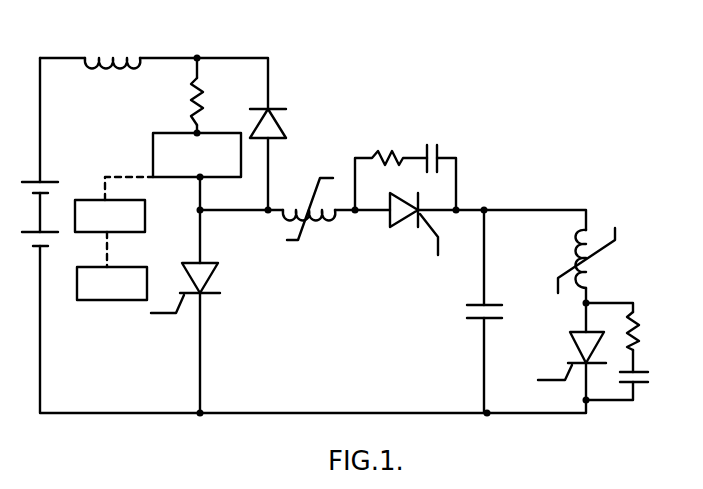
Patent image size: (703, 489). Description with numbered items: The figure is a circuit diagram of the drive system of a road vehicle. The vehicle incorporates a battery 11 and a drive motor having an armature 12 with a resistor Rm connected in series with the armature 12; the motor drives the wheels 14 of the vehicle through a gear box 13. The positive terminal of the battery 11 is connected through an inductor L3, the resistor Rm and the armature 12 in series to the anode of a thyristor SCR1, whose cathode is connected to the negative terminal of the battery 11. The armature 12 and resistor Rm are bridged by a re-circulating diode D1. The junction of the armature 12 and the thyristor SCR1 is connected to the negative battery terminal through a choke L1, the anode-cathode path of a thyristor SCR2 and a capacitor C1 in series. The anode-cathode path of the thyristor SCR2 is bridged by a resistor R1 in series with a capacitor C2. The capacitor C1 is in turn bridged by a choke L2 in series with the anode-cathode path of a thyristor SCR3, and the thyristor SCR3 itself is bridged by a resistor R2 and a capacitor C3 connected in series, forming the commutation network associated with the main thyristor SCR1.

The battery 11 is at (36, 202).
The armature 12 is at (164, 133).
The gear box 13 is at (90, 199).
The wheels 14 is at (98, 300).
The inductor L3 is at (112, 51).
The resistor RM is at (214, 101).
The re-circulating diode D1 is at (282, 124).
The thyristor SCR1 is at (217, 288).
The choke L1 is at (309, 216).
The resistor R1 is at (405, 170).
The capacitor C2 is at (448, 151).
The thyristor SCR2 is at (406, 230).
The capacitor C1 is at (493, 301).
The choke L2 is at (593, 260).
The resistor R2 is at (647, 330).
The thyristor SCR3 is at (566, 356).
The capacitor C3 is at (620, 383).